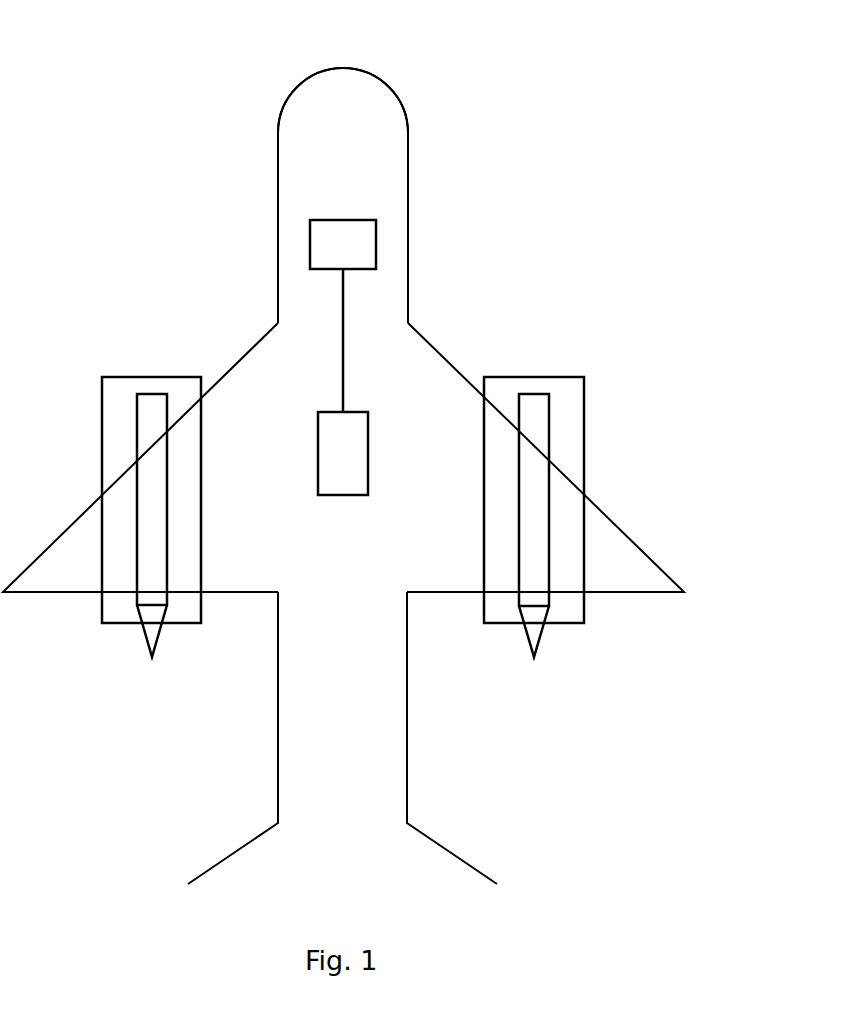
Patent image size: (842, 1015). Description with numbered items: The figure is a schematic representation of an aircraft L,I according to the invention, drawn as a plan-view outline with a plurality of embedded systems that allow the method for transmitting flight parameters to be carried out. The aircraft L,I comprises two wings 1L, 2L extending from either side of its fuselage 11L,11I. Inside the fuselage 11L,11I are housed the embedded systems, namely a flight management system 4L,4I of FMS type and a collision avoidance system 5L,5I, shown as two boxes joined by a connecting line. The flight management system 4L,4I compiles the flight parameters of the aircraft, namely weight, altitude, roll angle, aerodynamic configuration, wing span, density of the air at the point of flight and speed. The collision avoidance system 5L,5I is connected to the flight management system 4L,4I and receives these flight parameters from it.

The aircraft L,I is at (343, 448).
The fuselage 11L,11I is at (315, 90).
The flight management system 4L,4I is at (377, 247).
The collision avoidance system 5L,5I is at (317, 417).
The wing 2L is at (421, 333).
The wing 1L is at (218, 375).